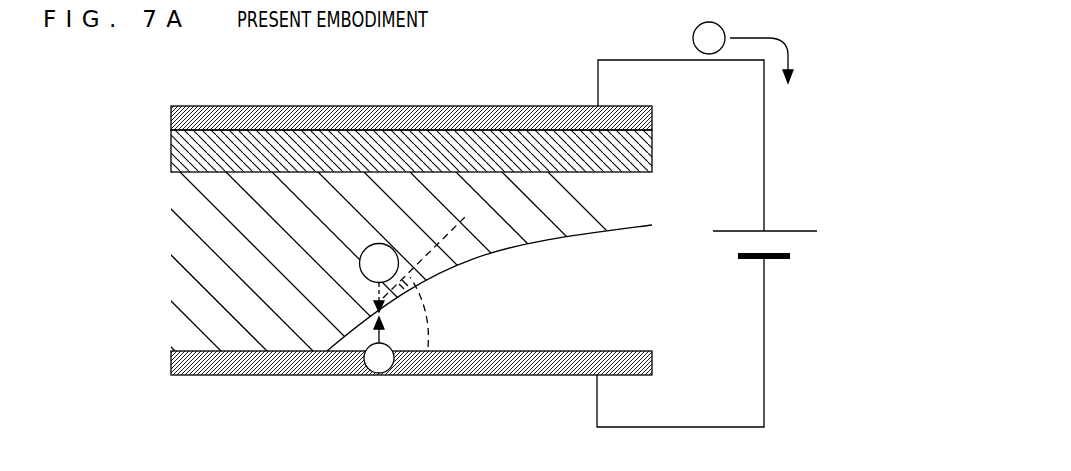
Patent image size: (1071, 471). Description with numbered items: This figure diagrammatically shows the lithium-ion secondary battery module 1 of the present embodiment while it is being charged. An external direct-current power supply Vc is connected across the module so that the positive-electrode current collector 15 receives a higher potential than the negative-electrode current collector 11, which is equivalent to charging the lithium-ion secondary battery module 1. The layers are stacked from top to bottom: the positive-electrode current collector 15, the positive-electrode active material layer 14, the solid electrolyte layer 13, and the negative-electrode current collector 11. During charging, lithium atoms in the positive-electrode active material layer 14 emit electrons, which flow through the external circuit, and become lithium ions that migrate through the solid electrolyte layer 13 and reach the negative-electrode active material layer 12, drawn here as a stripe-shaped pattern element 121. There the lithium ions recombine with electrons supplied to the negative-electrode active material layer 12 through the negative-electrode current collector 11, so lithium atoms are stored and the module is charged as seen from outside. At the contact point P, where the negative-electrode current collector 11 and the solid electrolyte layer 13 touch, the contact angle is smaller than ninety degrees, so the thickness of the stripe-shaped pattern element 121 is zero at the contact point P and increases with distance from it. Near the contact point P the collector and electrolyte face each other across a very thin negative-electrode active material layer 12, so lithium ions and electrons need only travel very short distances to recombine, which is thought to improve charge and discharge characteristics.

The lithium-ion secondary battery module 1 is at (362, 83).
The positive-electrode current collector 15 is at (163, 106).
The positive-electrode active material layer 14 is at (163, 131).
The solid electrolyte layer 13 is at (163, 173).
The stripe-shaped pattern element 121 is at (489, 288).
The negative-electrode active material layer 12 is at (643, 300).
The negative-electrode current collector 11 is at (163, 351).
The contact point P is at (323, 340).
The external direct-current power supply Vc is at (778, 230).